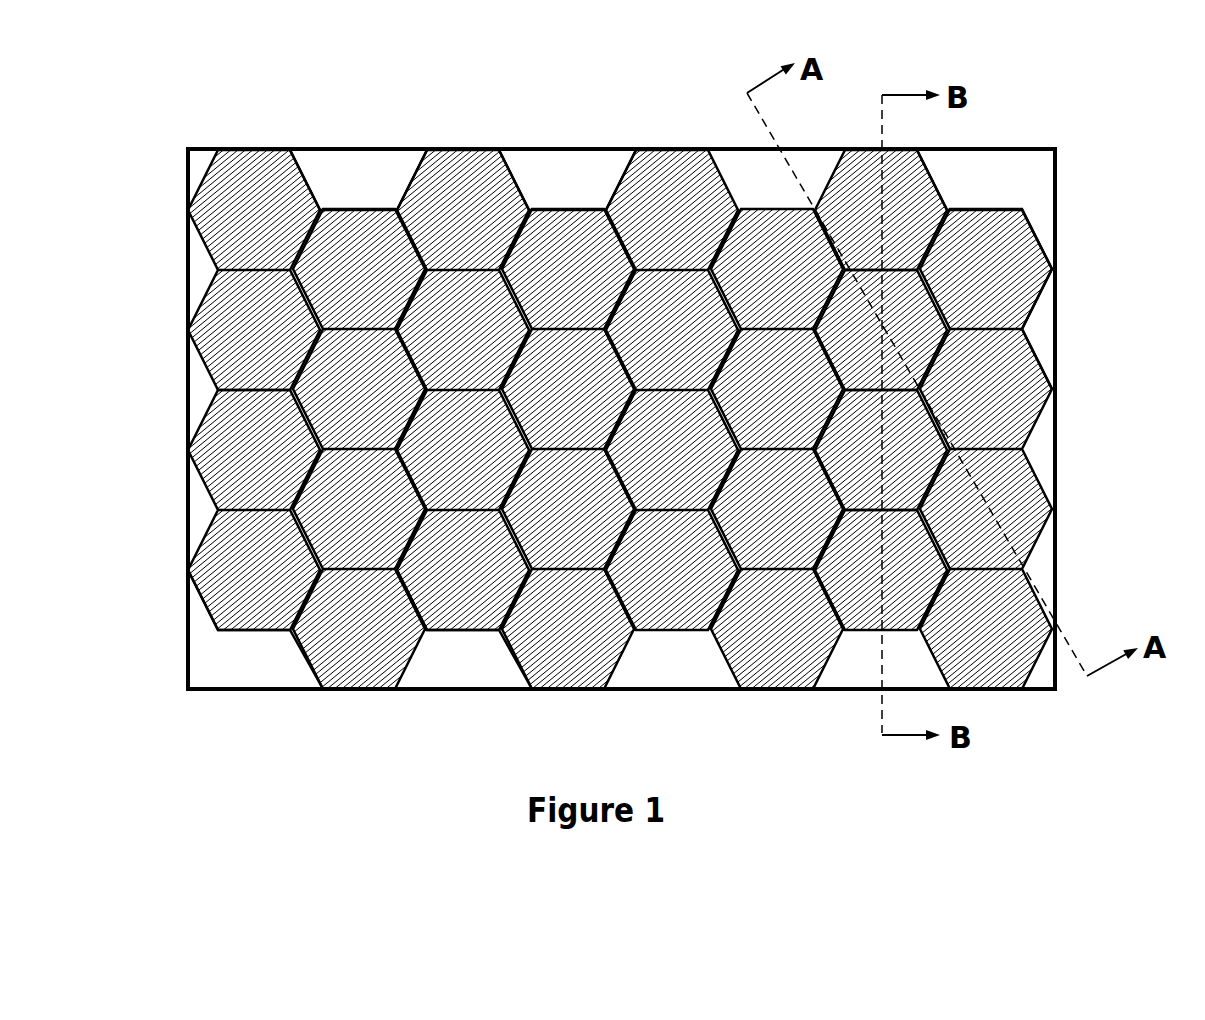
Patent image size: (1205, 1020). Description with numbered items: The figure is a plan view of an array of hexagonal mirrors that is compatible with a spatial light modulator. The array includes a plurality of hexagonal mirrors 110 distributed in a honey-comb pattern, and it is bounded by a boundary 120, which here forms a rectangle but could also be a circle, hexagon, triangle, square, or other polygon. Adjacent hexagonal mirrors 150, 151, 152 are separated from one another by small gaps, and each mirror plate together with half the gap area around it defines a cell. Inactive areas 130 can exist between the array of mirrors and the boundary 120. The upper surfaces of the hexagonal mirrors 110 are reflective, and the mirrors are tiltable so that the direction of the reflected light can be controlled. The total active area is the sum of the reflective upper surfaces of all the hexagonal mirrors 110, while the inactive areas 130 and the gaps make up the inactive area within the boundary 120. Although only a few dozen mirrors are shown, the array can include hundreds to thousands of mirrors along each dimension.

The hexagonal mirror 110 is at (279, 226).
The boundary 120 is at (178, 373).
The inactive area 130 is at (338, 165).
The adjacent hexagonal mirror 150 is at (907, 325).
The adjacent hexagonal mirror 151 is at (900, 440).
The adjacent hexagonal mirror 152 is at (913, 167).